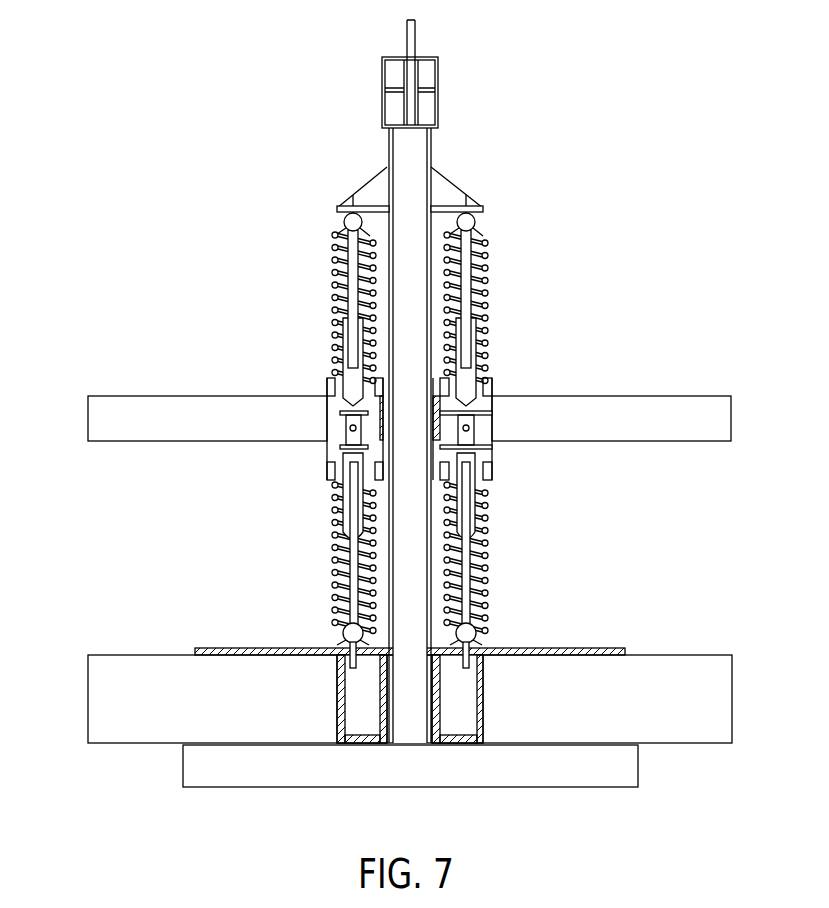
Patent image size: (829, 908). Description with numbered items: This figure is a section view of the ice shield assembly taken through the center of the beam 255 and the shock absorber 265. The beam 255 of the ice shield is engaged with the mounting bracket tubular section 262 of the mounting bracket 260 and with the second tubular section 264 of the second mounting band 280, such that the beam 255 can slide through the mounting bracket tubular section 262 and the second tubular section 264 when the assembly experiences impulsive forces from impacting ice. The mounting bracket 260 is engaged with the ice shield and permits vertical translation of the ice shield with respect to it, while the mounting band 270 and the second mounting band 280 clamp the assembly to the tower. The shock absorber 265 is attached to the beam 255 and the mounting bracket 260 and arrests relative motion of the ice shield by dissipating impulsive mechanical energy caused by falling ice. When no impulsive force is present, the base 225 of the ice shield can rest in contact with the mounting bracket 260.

The beam 255 is at (401, 157).
The second mounting band 280 is at (100, 422).
The shock absorber 265 is at (477, 322).
The second tubular section 264 is at (440, 407).
The mounting bracket 260 is at (510, 650).
The mounting band 270 is at (103, 706).
The base 225 is at (233, 770).
The mounting bracket tubular section 262 is at (380, 712).